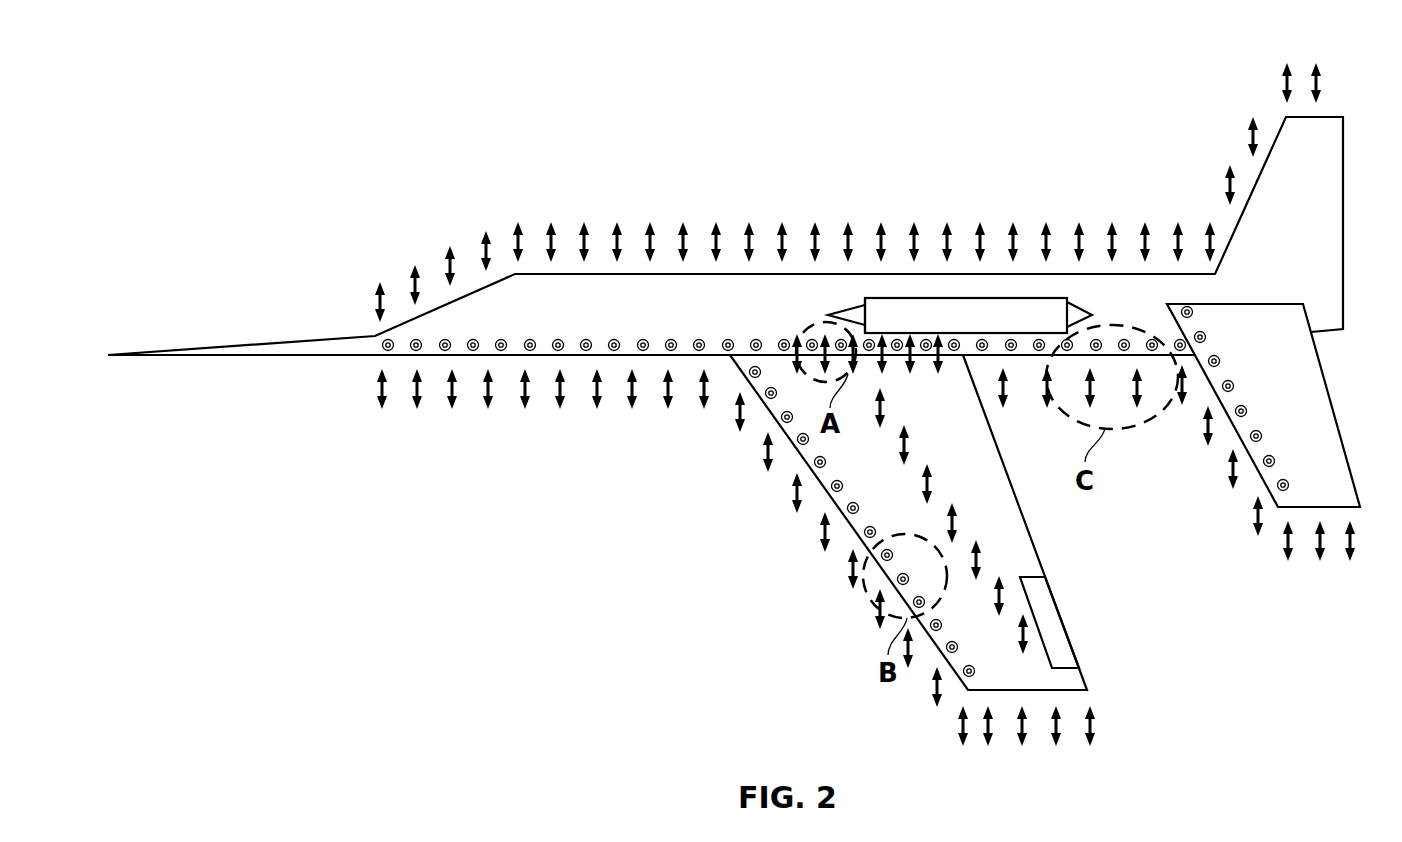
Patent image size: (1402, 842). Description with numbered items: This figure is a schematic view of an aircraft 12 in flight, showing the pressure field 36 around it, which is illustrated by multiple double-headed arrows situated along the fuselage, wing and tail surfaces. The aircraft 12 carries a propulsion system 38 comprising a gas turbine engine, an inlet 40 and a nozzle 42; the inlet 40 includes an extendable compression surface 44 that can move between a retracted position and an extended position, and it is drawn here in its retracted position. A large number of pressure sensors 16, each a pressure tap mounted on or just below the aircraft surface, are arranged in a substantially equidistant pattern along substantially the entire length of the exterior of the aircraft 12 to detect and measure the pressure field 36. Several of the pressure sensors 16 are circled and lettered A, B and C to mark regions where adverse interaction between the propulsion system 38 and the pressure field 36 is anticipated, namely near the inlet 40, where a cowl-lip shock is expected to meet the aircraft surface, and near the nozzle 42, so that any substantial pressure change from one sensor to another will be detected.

The aircraft 12 is at (513, 272).
The pressure sensor 16 is at (473, 340).
The pressure field 36 is at (358, 300).
The propulsion system 38 is at (979, 292).
The inlet 40 is at (866, 300).
The nozzle 42 is at (1075, 302).
The extendable compression surface 44 is at (840, 308).